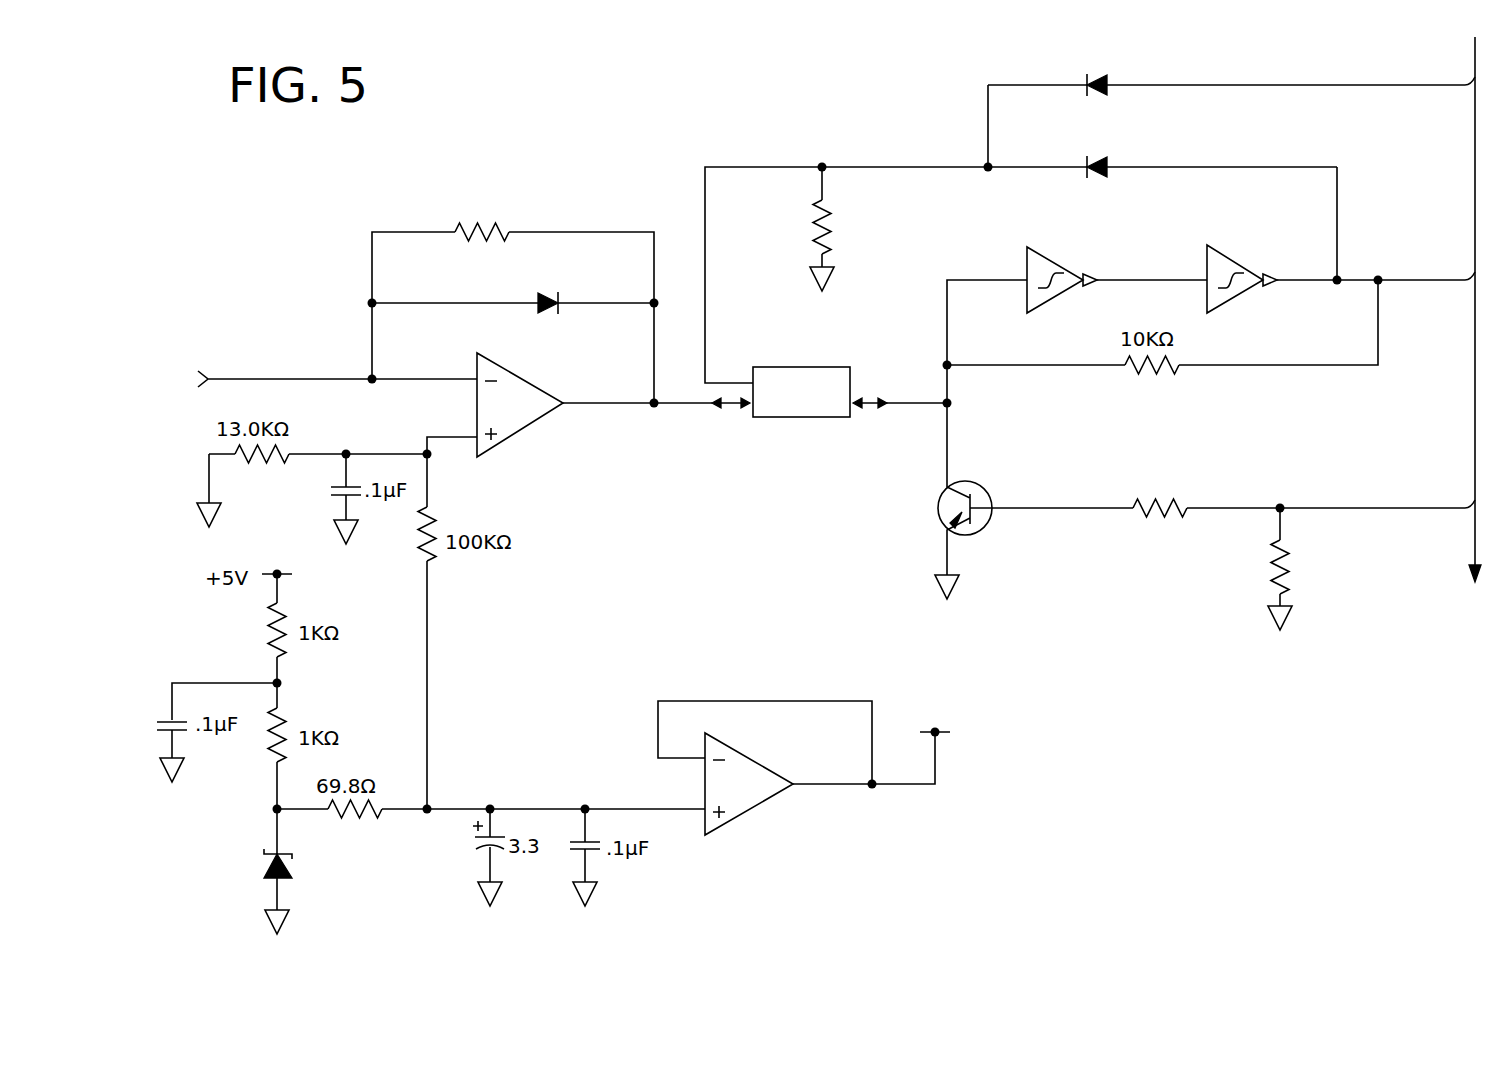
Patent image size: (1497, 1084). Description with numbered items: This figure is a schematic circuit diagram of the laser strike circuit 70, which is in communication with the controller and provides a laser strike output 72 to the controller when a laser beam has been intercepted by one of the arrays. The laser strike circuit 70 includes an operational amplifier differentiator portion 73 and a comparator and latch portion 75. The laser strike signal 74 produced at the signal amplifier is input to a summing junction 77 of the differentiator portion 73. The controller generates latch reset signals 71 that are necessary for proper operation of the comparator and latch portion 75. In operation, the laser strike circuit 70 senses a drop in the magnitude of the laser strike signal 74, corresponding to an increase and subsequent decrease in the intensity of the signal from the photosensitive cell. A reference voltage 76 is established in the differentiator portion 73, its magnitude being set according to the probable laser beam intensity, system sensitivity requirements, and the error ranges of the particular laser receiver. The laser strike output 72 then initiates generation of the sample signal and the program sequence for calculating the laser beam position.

The laser strike circuit 70 is at (1172, 706).
The latch reset signals 71 is at (1393, 90).
The laser strike output 72 is at (1415, 285).
The operational amplifier differentiator portion 73 is at (517, 156).
The laser strike signal 74 is at (256, 378).
The comparator and latch portion 75 is at (763, 127).
The reference voltage 76 is at (935, 760).
The summing junction 77 is at (372, 383).